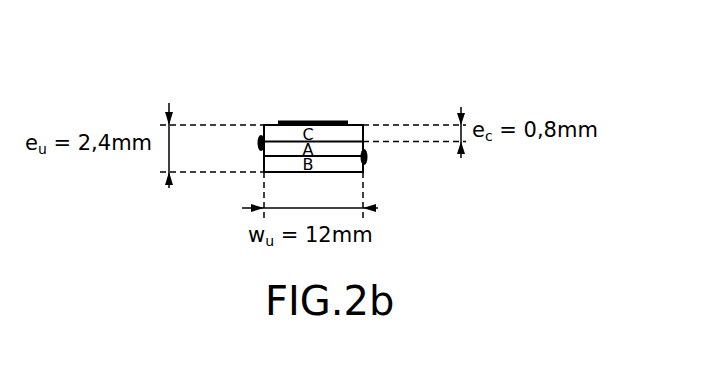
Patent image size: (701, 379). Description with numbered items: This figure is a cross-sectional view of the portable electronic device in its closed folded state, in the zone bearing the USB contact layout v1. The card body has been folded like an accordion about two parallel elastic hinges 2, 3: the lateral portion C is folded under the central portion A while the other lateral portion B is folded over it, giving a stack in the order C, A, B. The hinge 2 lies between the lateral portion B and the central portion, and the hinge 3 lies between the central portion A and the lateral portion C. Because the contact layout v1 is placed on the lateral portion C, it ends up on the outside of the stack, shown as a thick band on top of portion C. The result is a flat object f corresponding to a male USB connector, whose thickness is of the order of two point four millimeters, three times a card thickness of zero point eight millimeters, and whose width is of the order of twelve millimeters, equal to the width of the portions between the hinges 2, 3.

The elastic hinge 3 is at (260, 144).
The elastic hinge 2 is at (365, 160).
The flat object f is at (287, 87).
The contact layout v1 is at (313, 124).
The lateral portion C is at (358, 133).